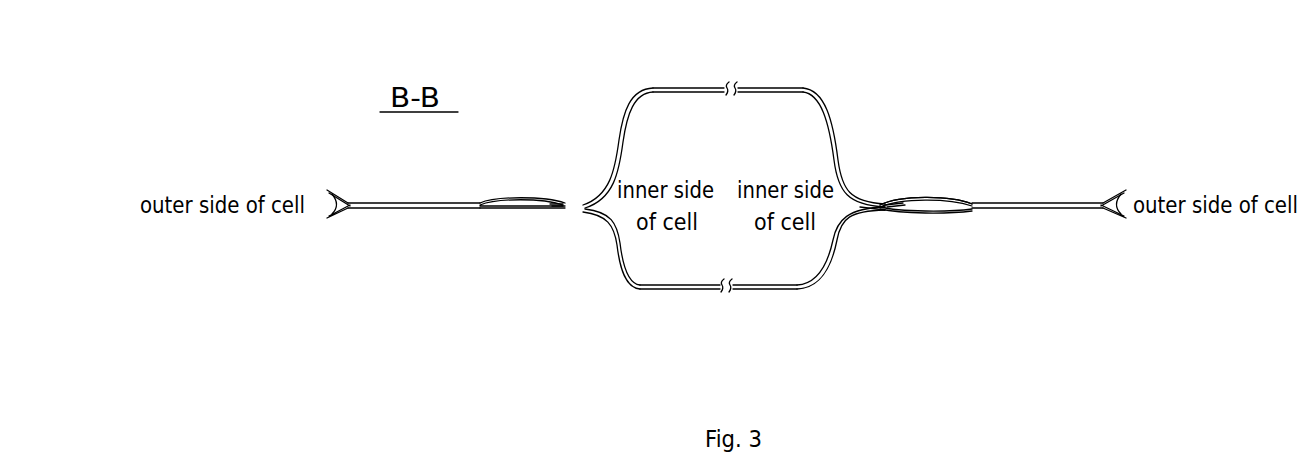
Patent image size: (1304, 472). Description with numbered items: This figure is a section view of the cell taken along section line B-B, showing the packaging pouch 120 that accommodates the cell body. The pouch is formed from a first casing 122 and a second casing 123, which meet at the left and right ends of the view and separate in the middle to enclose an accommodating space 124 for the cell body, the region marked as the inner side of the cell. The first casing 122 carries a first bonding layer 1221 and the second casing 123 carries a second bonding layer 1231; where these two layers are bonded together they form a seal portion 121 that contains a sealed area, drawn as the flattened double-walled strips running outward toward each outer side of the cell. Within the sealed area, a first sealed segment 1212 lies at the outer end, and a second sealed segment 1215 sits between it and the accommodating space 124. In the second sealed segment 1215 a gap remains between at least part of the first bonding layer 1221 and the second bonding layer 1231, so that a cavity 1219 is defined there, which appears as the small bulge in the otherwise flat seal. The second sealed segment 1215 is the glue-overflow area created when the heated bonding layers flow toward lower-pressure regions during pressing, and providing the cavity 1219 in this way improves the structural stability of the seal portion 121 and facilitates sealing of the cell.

The packaging pouch 120 is at (542, 72).
The seal portion 121 is at (472, 366).
The first casing 122 is at (780, 84).
The second casing 123 is at (772, 291).
The accommodating space 124 is at (682, 112).
The first sealed segment 1212 is at (432, 205).
The second sealed segment 1215 is at (528, 203).
The cavity 1219 is at (557, 210).
The first bonding layer 1221 is at (893, 202).
The second bonding layer 1231 is at (877, 210).